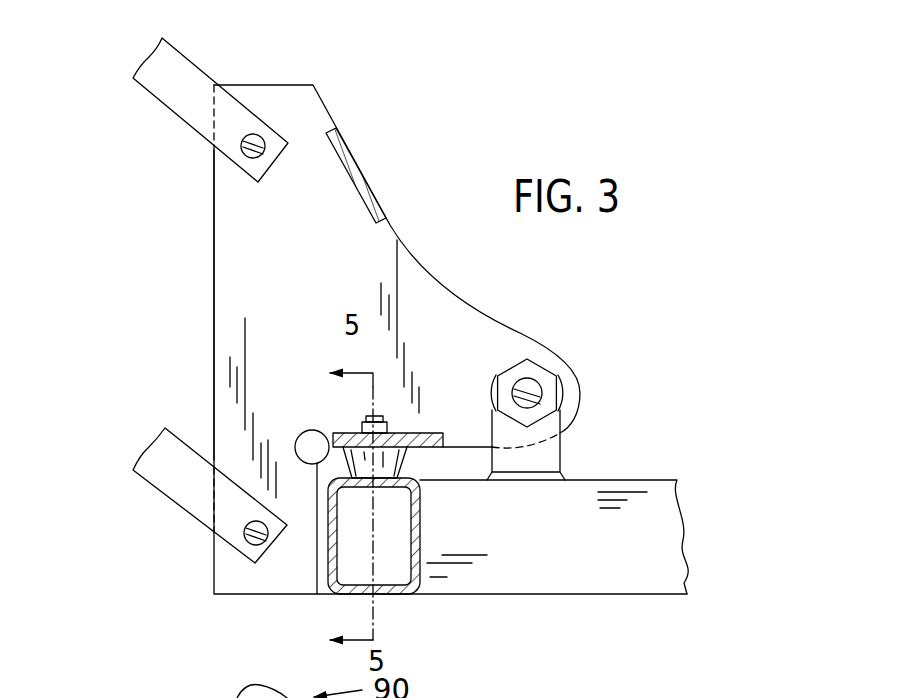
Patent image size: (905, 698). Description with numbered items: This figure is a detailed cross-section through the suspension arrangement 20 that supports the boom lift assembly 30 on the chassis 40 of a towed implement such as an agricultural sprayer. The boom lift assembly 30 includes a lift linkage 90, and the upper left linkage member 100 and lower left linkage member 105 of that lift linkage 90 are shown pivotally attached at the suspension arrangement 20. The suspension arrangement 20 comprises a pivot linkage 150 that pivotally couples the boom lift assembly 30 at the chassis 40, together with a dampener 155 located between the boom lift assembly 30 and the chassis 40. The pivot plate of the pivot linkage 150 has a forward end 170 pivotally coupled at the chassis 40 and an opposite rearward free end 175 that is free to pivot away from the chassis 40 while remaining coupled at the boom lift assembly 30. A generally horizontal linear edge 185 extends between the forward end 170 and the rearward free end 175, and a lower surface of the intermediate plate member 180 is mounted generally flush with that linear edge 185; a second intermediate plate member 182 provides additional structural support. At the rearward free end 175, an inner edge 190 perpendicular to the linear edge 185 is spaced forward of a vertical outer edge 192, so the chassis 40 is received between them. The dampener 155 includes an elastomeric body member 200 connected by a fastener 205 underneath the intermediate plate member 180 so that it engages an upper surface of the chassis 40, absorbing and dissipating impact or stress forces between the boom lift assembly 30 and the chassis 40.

The suspension arrangement 20 is at (567, 289).
The boom lift assembly 30 is at (105, 497).
The chassis 40 is at (630, 468).
The lift linkage 90 is at (192, 51).
The upper left linkage member 100 is at (142, 88).
The lower left linkage member 105 is at (157, 492).
The pivot linkage 150 is at (449, 206).
The dampener 155 is at (443, 447).
The forward end 170 is at (602, 337).
The rearward free end 175 is at (220, 612).
The intermediate plate member 180 is at (435, 430).
The intermediate plate member 182 is at (380, 198).
The linear edge 185 is at (465, 447).
The inner edge 190 is at (313, 543).
The outer edge 192 is at (214, 358).
The body member 200 is at (427, 462).
The fastener 205 is at (378, 412).